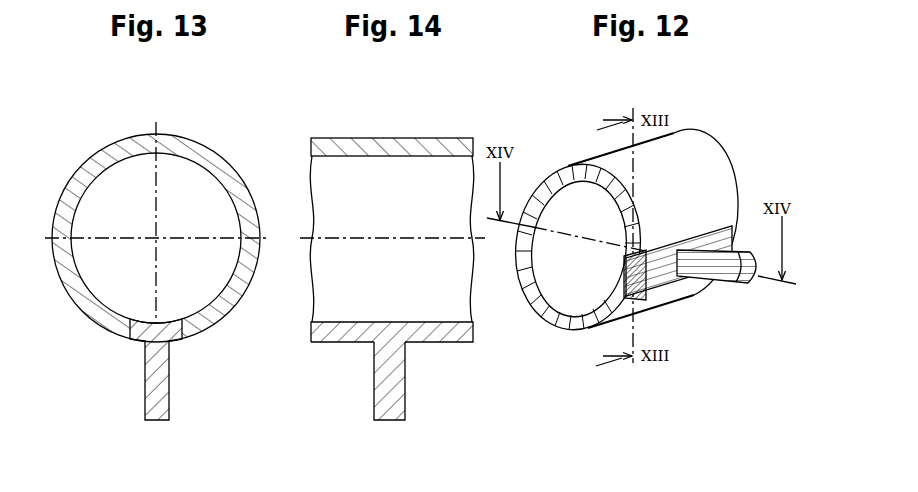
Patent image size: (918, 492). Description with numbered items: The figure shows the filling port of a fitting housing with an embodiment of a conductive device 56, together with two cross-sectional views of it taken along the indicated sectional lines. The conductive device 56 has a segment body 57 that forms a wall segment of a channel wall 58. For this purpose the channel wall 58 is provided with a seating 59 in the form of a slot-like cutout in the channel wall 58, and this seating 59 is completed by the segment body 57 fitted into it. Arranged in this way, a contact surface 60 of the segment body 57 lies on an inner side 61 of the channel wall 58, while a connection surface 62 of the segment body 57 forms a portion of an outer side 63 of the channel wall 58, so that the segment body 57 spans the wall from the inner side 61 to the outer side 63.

In FIG. 12, the conductive device 56 is at (700, 226).
In FIG. 13, the segment body 57 is at (174, 338).
In FIG. 14, the segment body 57 is at (396, 331).
In FIG. 12, the segment body 57 is at (667, 283).
In FIG. 13, the channel wall 58 is at (210, 163).
In FIG. 14, the channel wall 58 is at (389, 148).
In FIG. 12, the channel wall 58 is at (560, 165).
In FIG. 12, the seating 59 is at (626, 272).
In FIG. 13, the contact surface 60 is at (163, 322).
In FIG. 14, the contact surface 60 is at (376, 309).
In FIG. 13, the inner side 61 is at (240, 255).
In FIG. 14, the inner side 61 is at (373, 168).
In FIG. 13, the connection surface 62 is at (136, 342).
In FIG. 13, the outer side 63 is at (238, 311).